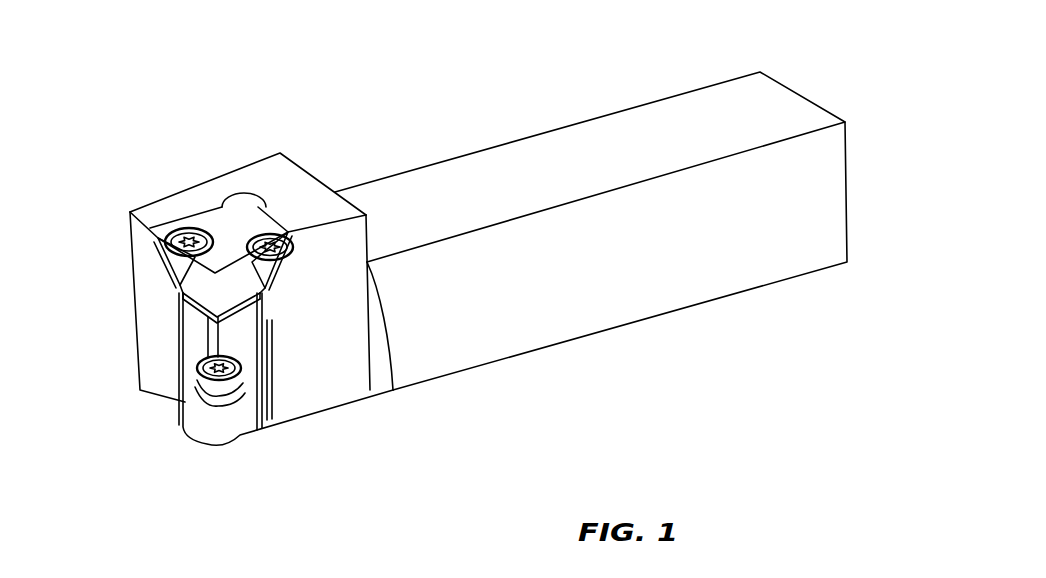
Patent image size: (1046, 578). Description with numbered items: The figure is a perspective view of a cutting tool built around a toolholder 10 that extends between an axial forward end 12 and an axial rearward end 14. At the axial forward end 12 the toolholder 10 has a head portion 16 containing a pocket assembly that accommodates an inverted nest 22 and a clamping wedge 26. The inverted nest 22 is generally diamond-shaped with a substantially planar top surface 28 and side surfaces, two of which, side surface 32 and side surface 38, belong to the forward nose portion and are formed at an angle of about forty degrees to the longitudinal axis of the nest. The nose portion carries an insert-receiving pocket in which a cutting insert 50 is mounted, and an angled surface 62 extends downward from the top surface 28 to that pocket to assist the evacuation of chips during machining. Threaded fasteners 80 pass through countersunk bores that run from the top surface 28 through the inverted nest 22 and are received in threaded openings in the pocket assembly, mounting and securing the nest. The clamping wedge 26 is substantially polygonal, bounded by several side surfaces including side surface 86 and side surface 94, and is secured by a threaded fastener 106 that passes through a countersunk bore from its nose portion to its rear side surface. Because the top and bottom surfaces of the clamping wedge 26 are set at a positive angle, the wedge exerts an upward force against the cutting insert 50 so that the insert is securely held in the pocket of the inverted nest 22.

The toolholder 10 is at (108, 90).
The axial forward end 12 is at (170, 440).
The axial rearward end 14 is at (816, 89).
The head portion 16 is at (338, 380).
The inverted nest 22 is at (152, 250).
The clamping wedge 26 is at (267, 352).
The top surface 28 is at (238, 222).
The side surface 32 is at (165, 281).
The side surface 38 is at (282, 286).
The cutting insert 50 is at (195, 326).
The angled surface 62 is at (226, 300).
The threaded fastener 80 is at (181, 228).
The side surface 86 is at (195, 344).
The side surface 94 is at (244, 387).
The threaded fastener 106 is at (223, 376).